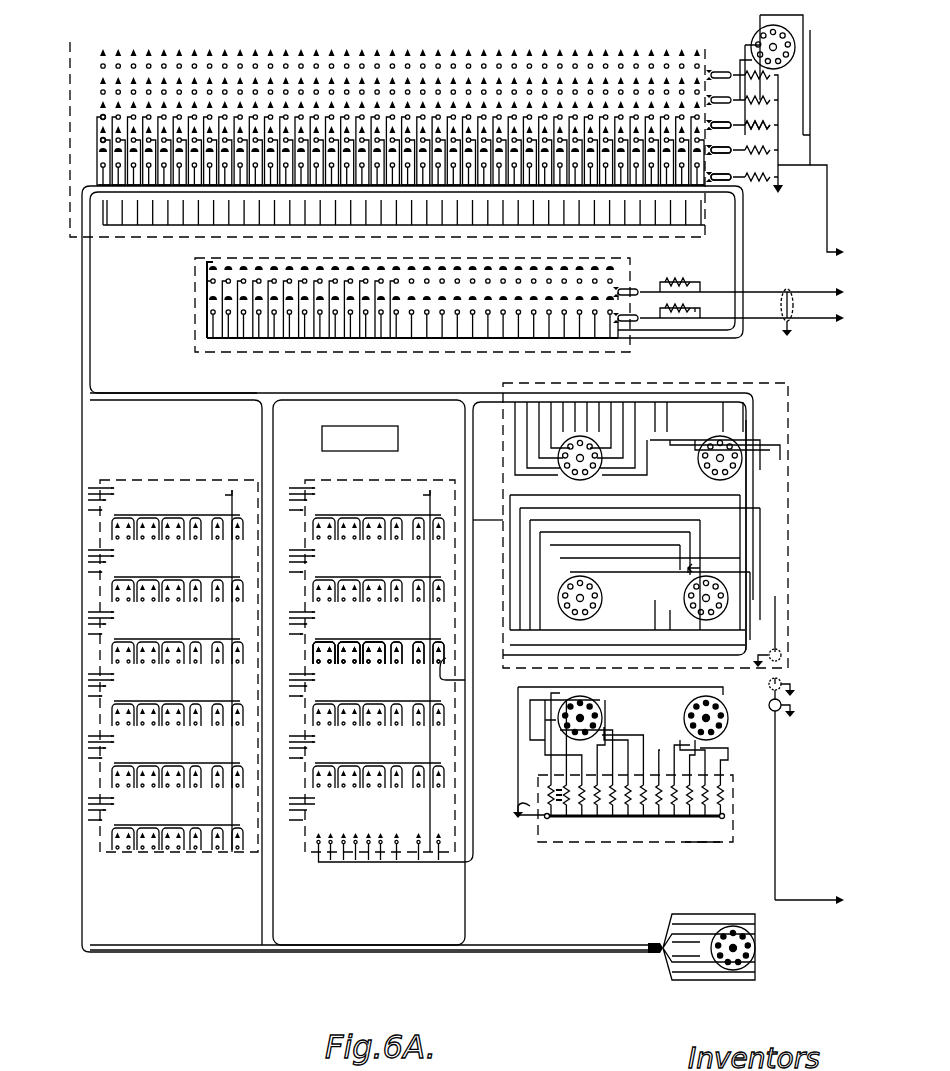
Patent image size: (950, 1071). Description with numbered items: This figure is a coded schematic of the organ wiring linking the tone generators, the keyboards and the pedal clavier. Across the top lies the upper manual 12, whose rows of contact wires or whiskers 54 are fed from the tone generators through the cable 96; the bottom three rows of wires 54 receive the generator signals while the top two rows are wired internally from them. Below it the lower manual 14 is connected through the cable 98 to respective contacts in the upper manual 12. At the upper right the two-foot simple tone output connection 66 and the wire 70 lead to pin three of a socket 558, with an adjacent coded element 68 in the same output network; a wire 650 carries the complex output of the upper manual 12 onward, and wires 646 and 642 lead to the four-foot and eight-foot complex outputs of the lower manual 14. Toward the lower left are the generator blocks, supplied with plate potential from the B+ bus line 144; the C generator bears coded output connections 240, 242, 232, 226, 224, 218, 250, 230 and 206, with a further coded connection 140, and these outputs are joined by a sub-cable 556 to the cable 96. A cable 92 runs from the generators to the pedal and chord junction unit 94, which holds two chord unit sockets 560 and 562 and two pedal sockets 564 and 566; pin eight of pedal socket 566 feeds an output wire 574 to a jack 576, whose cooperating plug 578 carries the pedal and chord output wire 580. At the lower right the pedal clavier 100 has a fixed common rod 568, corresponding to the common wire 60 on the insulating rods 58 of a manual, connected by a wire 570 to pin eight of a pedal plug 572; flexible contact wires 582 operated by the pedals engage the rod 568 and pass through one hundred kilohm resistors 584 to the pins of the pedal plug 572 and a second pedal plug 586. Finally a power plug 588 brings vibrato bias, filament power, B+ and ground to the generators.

The upper manual 12 is at (70, 42).
The wires or whiskers 54 is at (101, 140).
The lower manual 14 is at (195, 292).
The cable 96 is at (150, 398).
The cable 92 is at (474, 392).
The cable 98 is at (740, 242).
The wire 70 is at (745, 45).
The socket 558 is at (795, 38).
The output connection 66 is at (740, 126).
The resistor 68 is at (770, 126).
The wire 60 is at (736, 133).
The insulating rod 58 is at (728, 178).
The wire 650 is at (802, 165).
The wire 646 is at (805, 291).
The wire 642 is at (810, 319).
The pedal and chord junction unit 94 is at (790, 396).
The sub-cable 556 is at (466, 446).
The chord unit socket 560 is at (572, 479).
The chord unit socket 562 is at (745, 462).
The pedal socket 564 is at (576, 575).
The pedal socket 566 is at (722, 580).
The output wire 574 is at (785, 596).
The jack 576 is at (783, 648).
The plug 578 is at (783, 680).
The B+ bus line 144 is at (312, 488).
The generator 240 is at (320, 645).
The generator 242 is at (328, 655).
The generator 232 is at (365, 662).
The generator 226 is at (382, 664).
The generator 224 is at (392, 664).
The generator 218 is at (418, 664).
The generator 250 is at (320, 664).
The generator 230 is at (350, 664).
The generator 206 is at (408, 664).
The lead 140 is at (456, 680).
The wire 570 is at (518, 768).
The second pedal plug 586 is at (605, 713).
The pedal plug 572 is at (725, 718).
The resistors 584 is at (705, 790).
The common rod 568 is at (705, 812).
The flexible contact wires 582 is at (570, 800).
The pedal clavier 100 is at (695, 843).
The pedal and chord output wire 580 is at (778, 840).
The power plug 588 is at (758, 944).